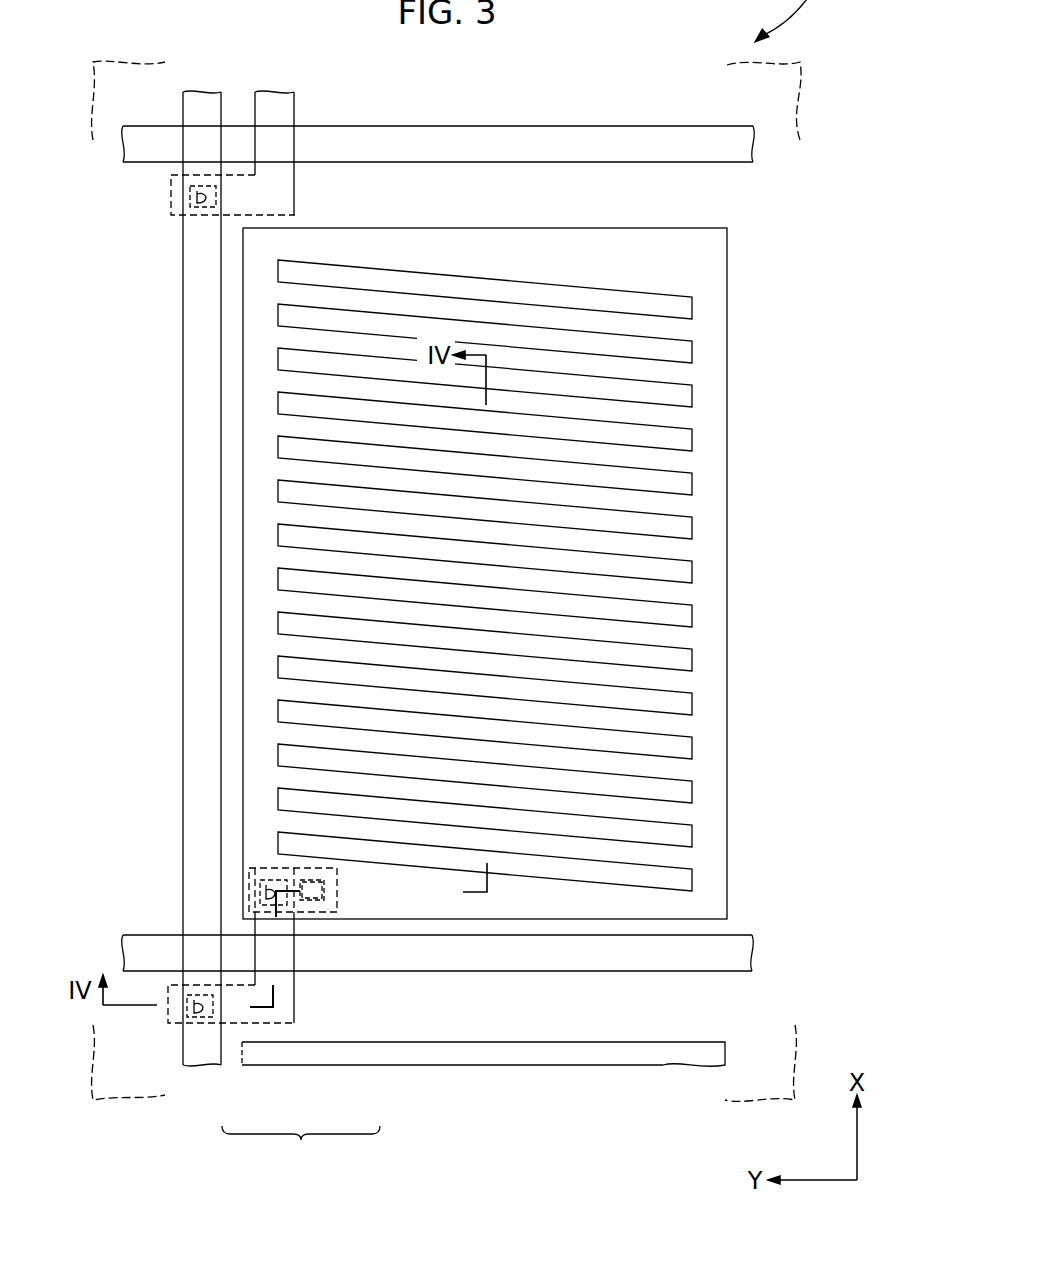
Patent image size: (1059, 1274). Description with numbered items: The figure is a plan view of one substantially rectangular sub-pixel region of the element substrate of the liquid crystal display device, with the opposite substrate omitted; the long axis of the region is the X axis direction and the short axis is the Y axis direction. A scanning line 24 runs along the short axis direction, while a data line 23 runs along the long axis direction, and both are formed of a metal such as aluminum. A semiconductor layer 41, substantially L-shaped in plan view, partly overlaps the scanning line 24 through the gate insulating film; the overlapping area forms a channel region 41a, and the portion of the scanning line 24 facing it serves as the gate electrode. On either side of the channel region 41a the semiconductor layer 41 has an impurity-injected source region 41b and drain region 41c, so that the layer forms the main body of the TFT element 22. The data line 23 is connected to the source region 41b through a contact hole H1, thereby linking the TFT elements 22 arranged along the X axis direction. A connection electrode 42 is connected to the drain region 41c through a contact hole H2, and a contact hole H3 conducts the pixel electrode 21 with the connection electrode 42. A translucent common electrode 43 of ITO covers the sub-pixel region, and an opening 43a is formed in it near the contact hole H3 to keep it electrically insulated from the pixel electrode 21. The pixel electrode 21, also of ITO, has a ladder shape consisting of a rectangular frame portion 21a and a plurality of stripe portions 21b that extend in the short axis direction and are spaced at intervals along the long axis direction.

The pixel electrode 21 is at (823, 340).
The frame portion 21a is at (717, 347).
The stripe portions 21b is at (585, 363).
The TFT element 22 is at (322, 962).
The data line 23 is at (197, 1047).
The scanning line 24 is at (155, 137).
The semiconductor layer 41 is at (325, 187).
The channel region 41a is at (280, 955).
The source region 41b is at (230, 1015).
The drain region 41c is at (282, 908).
The connection electrode 42 is at (300, 870).
The common electrode 43 is at (793, 104).
The opening 43a is at (262, 868).
The contact hole H1 is at (190, 197).
The contact hole H2 is at (262, 885).
The contact hole H3 is at (300, 892).